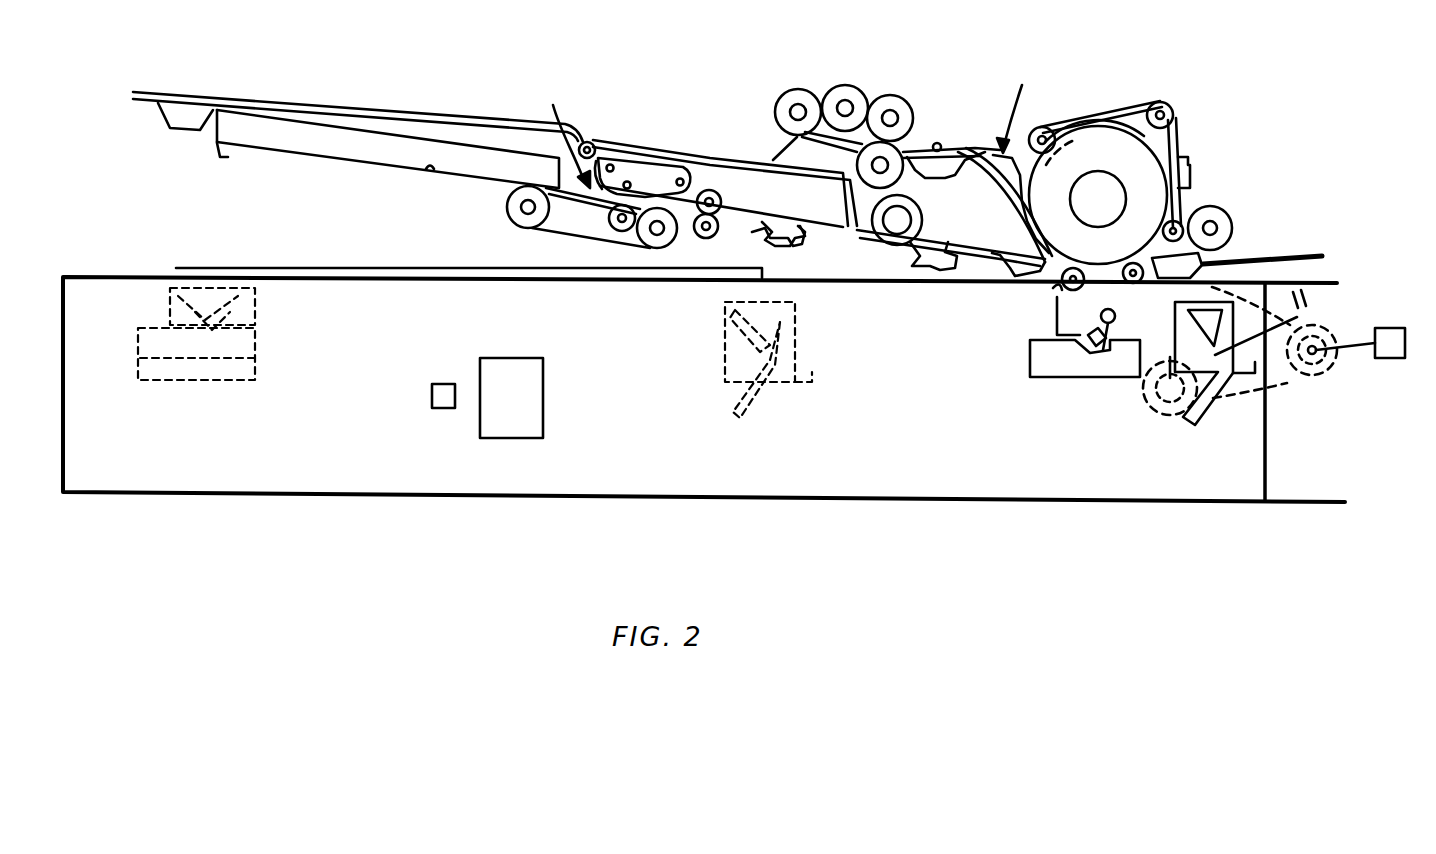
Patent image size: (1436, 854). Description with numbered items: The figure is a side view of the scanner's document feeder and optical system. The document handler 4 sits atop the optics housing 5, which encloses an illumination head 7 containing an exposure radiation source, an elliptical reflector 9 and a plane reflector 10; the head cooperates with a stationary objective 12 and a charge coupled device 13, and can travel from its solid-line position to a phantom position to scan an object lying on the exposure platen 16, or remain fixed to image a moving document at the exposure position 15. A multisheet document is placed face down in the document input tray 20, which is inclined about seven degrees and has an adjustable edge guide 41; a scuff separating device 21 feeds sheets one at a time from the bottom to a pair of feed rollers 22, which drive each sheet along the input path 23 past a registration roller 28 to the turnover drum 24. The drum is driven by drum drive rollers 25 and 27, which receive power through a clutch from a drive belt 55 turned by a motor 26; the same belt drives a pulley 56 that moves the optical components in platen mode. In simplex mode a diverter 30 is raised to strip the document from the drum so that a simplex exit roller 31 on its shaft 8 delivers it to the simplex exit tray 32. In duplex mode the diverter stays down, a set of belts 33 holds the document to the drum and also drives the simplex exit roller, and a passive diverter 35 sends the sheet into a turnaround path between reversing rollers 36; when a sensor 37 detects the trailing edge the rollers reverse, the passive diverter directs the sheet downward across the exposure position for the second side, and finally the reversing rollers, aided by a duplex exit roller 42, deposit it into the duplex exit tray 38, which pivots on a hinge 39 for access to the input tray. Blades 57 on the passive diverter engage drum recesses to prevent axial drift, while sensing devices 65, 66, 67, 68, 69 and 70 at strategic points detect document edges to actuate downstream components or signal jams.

The document handler 4 is at (1012, 104).
The optics housing 5 is at (1243, 485).
The illumination head 7 is at (1202, 363).
The shaft 8 is at (1030, 367).
The elliptical reflector 9 is at (1110, 357).
The plane reflector 10 is at (1075, 357).
The objective 12 is at (545, 428).
The charge coupled device 13 is at (440, 410).
The exposure position 15 is at (1097, 267).
The exposure platen 16 is at (178, 268).
The document input tray 20 is at (430, 170).
The scuff separating device 21 is at (560, 131).
The feed rollers 22 is at (710, 190).
The input path 23 is at (843, 237).
The turnover drum 24 is at (1114, 125).
The drum drive roller 25 is at (1075, 318).
The motor 26 is at (1392, 328).
The drum drive roller 27 is at (1055, 288).
The registration roller 28 is at (918, 215).
The diverter 30 is at (1153, 250).
The simplex exit roller 31 is at (1233, 228).
The simplex exit tray 32 is at (1324, 258).
The belts 33 is at (1180, 128).
The passive diverter 35 is at (1020, 165).
The reversing rollers 36 is at (893, 100).
The sensor 37 is at (942, 143).
The duplex exit tray 38 is at (397, 113).
The hinge 39 is at (590, 142).
The edge guide 41 is at (285, 146).
The duplex exit roller 42 is at (793, 95).
The drive belt 55 is at (1293, 385).
The pulley 56 is at (1143, 380).
The blades 57 is at (1083, 110).
The sensing device 65 is at (625, 238).
The sensing device 66 is at (760, 241).
The sensing device 67 is at (918, 260).
The sensing device 68 is at (1045, 278).
The sensing device 69 is at (1205, 255).
The sensing device 70 is at (1196, 182).